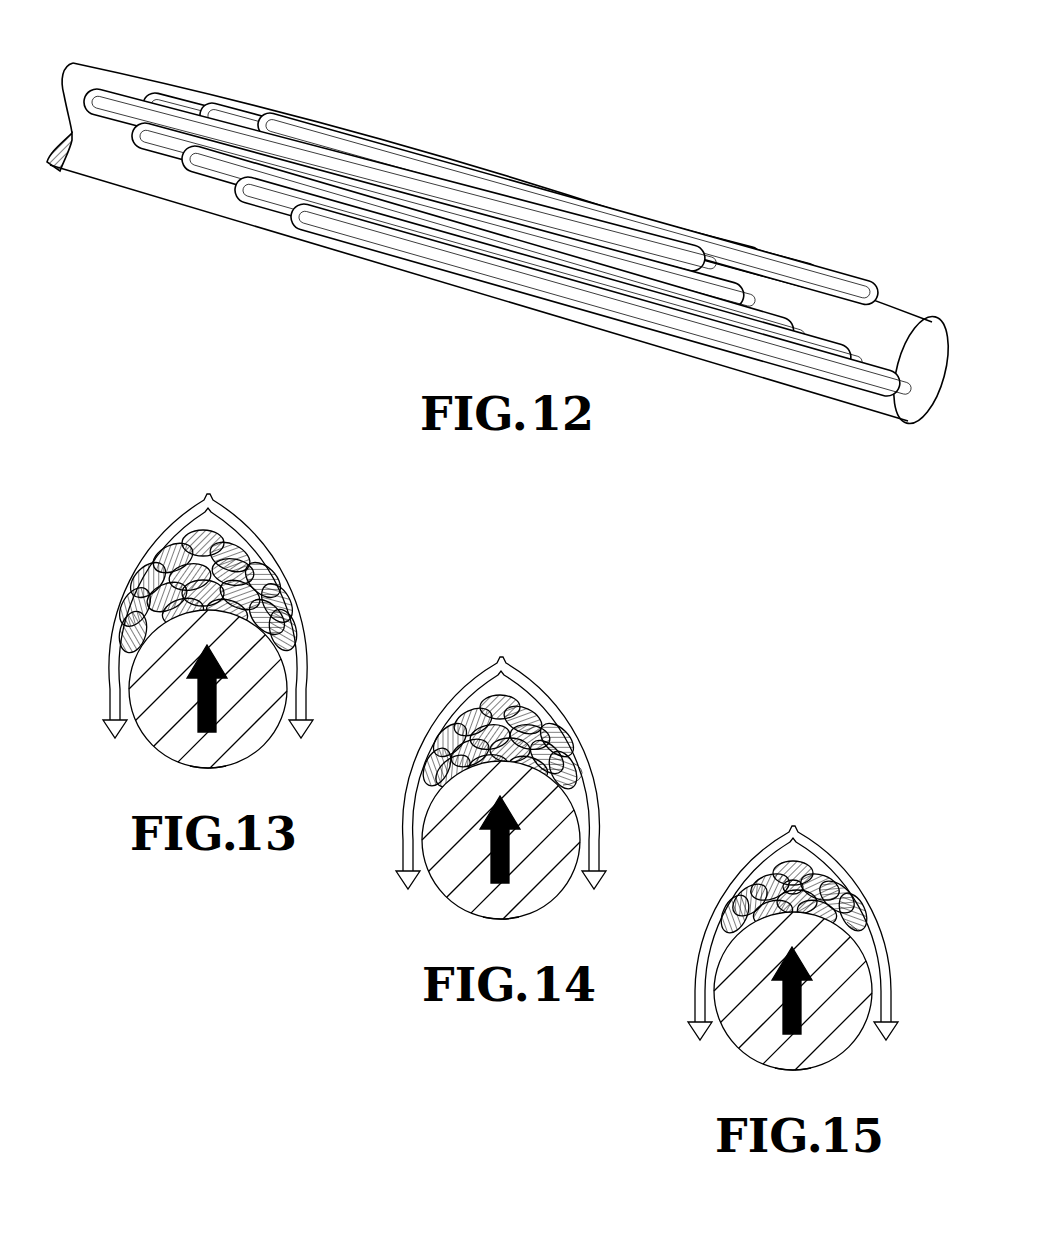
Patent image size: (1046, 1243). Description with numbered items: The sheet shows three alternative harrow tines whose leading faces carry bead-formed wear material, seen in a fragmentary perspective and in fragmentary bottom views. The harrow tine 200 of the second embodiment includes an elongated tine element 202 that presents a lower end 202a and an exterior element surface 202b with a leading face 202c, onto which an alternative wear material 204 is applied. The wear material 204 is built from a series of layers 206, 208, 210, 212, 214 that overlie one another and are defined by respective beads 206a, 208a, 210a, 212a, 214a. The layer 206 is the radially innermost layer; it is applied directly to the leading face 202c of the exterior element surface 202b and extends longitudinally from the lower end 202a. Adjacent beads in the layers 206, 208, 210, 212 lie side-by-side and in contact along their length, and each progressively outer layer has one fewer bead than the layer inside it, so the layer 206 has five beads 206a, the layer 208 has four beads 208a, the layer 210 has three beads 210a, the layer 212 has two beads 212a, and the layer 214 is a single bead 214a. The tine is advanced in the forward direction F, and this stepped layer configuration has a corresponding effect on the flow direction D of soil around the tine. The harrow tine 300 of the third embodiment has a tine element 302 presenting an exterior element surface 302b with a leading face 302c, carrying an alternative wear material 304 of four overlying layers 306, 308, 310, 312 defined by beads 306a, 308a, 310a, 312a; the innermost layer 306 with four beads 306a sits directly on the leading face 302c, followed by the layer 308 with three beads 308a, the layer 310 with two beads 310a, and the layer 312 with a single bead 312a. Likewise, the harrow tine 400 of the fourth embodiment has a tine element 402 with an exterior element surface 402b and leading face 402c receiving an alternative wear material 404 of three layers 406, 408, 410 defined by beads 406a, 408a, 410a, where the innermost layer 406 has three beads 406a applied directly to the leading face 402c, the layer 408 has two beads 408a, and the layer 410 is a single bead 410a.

In FIG. 12, the harrow tine 200 is at (688, 84).
In FIG. 13, the harrow tine 200 is at (200, 488).
In FIG. 12, the tine element 202 is at (93, 160).
In FIG. 13, the tine element 202 is at (145, 735).
In FIG. 12, the lower end 202a is at (935, 312).
In FIG. 12, the exterior element surface 202b is at (83, 72).
In FIG. 13, the exterior element surface 202b is at (212, 768).
In FIG. 12, the leading face 202c is at (125, 137).
In FIG. 13, the leading face 202c is at (305, 660).
In FIG. 12, the wear material 204 is at (577, 193).
In FIG. 13, the wear material 204 is at (112, 660).
In FIG. 12, the layer 206 is at (600, 360).
In FIG. 12, the beads 206a is at (878, 390).
In FIG. 13, the beads 206a is at (132, 620).
In FIG. 12, the layer 208 is at (548, 321).
In FIG. 12, the beads 208a is at (828, 365).
In FIG. 13, the beads 208a is at (138, 595).
In FIG. 12, the layer 210 is at (492, 301).
In FIG. 12, the beads 210a is at (742, 328).
In FIG. 13, the beads 210a is at (152, 572).
In FIG. 12, the layer 212 is at (442, 264).
In FIG. 12, the beads 212a is at (697, 290).
In FIG. 13, the beads 212a is at (175, 550).
In FIG. 12, the layer 214 is at (442, 180).
In FIG. 12, the bead 214a is at (660, 243).
In FIG. 13, the bead 214a is at (208, 535).
In FIG. 14, the harrow tine 300 is at (528, 604).
In FIG. 14, the tine element 302 is at (473, 840).
In FIG. 14, the exterior element surface 302b is at (549, 937).
In FIG. 14, the leading face 302c is at (626, 813).
In FIG. 14, the wear material 304 is at (476, 773).
In FIG. 14, the layer 306 is at (601, 747).
In FIG. 14, the beads 306a is at (500, 736).
In FIG. 14, the layer 308 is at (435, 694).
In FIG. 14, the beads 308a is at (499, 722).
In FIG. 14, the layer 310 is at (452, 670).
In FIG. 14, the beads 310a is at (552, 683).
In FIG. 14, the layer 312 is at (468, 644).
In FIG. 14, the bead 312a is at (514, 686).
In FIG. 15, the harrow tine 400 is at (755, 764).
In FIG. 15, the tine element 402 is at (764, 992).
In FIG. 15, the exterior element surface 402b is at (841, 1088).
In FIG. 15, the leading face 402c is at (913, 957).
In FIG. 15, the wear material 404 is at (778, 933).
In FIG. 15, the layer 406 is at (885, 887).
In FIG. 15, the beads 406a is at (796, 877).
In FIG. 15, the layer 408 is at (735, 854).
In FIG. 15, the beads 408a is at (857, 854).
In FIG. 15, the layer 410 is at (760, 822).
In FIG. 15, the bead 410a is at (830, 827).
In FIG. 13, the flow direction D is at (302, 690).
In FIG. 14, the flow direction D is at (626, 822).
In FIG. 15, the flow direction D is at (919, 973).
In FIG. 13, the forward direction F is at (198, 728).
In FIG. 14, the forward direction F is at (461, 870).
In FIG. 15, the forward direction F is at (754, 1022).